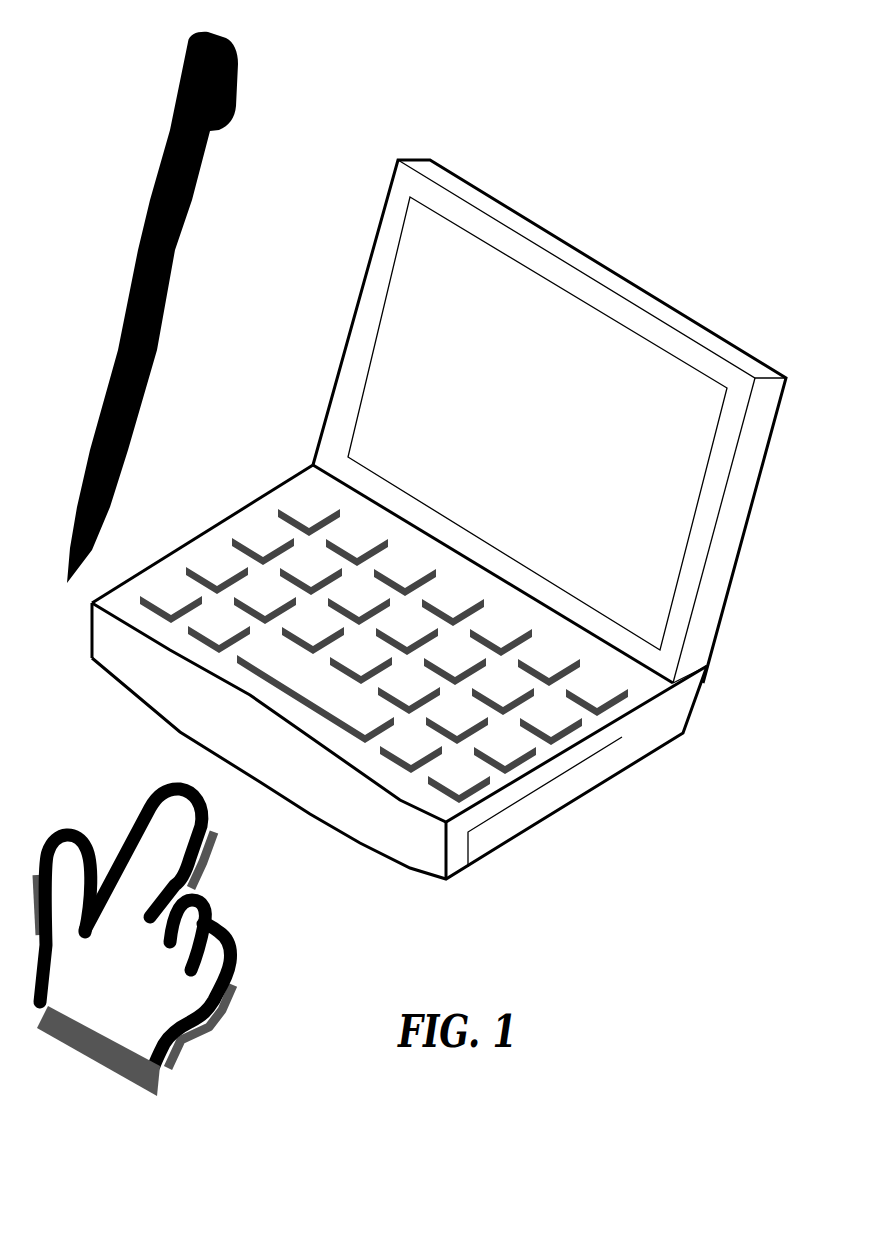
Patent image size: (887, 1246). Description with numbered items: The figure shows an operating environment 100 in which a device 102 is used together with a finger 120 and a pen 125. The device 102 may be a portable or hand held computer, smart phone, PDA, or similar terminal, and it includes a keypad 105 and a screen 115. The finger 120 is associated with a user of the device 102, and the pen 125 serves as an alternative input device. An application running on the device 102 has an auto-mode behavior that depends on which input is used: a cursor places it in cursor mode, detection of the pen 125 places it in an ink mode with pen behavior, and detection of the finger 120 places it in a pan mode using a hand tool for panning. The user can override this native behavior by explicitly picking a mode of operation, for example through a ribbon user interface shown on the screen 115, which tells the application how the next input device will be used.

The operating environment 100 is at (445, 83).
The device 102 is at (549, 409).
The screen 115 is at (531, 400).
The keypad 105 is at (392, 672).
The finger 120 is at (150, 808).
The pen 125 is at (167, 167).